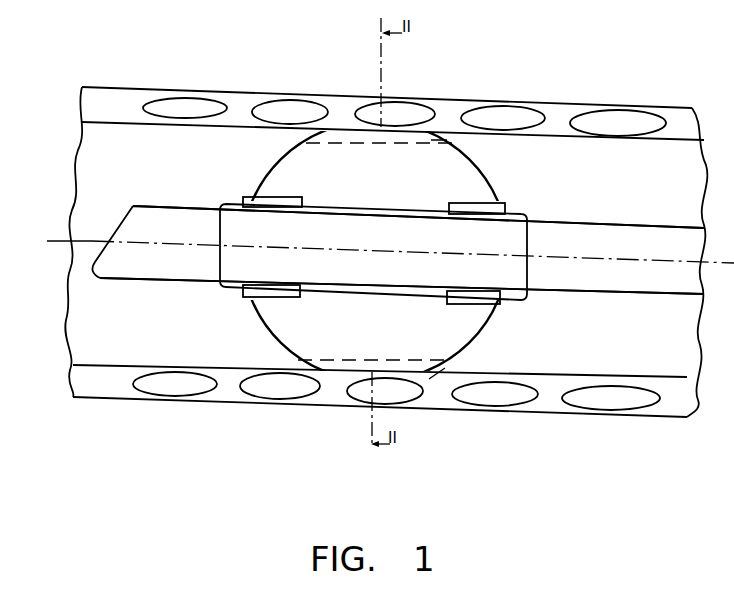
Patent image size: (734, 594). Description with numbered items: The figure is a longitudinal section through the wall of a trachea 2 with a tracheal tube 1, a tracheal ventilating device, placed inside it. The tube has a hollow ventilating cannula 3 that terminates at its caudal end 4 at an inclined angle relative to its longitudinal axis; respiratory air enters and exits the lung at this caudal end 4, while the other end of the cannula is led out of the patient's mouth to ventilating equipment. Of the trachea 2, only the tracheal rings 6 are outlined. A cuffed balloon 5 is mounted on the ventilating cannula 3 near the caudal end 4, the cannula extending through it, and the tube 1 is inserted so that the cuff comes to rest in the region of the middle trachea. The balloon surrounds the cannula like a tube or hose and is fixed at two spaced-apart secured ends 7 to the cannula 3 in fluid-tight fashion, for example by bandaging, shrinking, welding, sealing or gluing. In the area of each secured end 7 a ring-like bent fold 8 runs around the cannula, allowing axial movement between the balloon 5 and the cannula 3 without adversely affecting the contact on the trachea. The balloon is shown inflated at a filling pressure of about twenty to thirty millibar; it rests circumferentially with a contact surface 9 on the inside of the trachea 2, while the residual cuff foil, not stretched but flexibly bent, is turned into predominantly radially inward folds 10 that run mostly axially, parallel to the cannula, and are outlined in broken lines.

The tracheal tube 1 is at (677, 205).
The trachea 2 is at (683, 120).
The ventilating cannula 3 is at (682, 277).
The caudal end 4 is at (128, 224).
The cuffed balloon 5 is at (280, 173).
The tracheal rings 6 is at (512, 118).
The secured ends 7 is at (232, 218).
The bent fold 8 is at (268, 210).
The contact surface 9 is at (340, 121).
The folds 10 is at (444, 140).